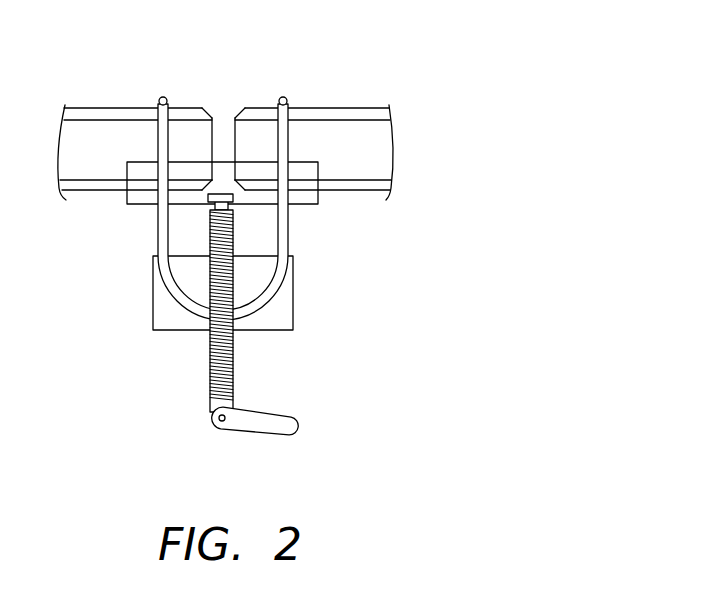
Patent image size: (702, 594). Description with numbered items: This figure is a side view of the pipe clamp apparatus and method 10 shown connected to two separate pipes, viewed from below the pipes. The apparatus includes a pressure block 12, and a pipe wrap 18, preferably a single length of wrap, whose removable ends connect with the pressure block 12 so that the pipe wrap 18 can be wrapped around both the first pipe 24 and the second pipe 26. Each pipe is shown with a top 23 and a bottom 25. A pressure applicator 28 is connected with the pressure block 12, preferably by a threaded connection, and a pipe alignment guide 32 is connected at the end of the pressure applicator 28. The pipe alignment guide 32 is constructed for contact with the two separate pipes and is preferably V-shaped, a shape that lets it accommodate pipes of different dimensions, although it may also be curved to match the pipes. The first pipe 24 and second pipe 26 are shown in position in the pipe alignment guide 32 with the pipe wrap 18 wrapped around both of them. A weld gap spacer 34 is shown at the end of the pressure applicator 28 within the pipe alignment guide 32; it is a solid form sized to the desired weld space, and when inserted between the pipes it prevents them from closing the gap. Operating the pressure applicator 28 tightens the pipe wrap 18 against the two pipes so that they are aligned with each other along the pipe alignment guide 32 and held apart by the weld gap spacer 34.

The pipe clamp apparatus and method 10 is at (500, 52).
The pressure block 12 is at (295, 313).
The pipe wrap 18 is at (156, 222).
The top 23 is at (123, 108).
The first pipe 24 is at (90, 108).
The bottom 25 is at (70, 193).
The second pipe 26 is at (362, 118).
The pressure applicator 28 is at (210, 366).
The pipe alignment guide 32 is at (182, 162).
The weld gap spacer 34 is at (224, 194).